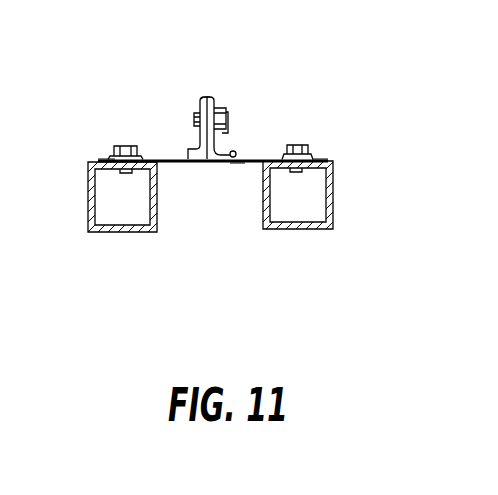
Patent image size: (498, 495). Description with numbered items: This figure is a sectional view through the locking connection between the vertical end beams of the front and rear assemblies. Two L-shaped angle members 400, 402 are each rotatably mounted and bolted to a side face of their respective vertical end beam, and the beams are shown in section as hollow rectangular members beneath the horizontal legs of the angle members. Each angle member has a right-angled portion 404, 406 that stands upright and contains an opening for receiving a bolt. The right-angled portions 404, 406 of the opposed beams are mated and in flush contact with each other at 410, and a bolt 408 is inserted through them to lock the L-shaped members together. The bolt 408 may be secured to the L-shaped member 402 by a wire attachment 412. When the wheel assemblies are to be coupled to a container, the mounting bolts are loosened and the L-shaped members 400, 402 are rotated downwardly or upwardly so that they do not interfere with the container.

The L-shaped angle member 400 is at (172, 164).
The L-shaped angle member 402 is at (237, 165).
The right-angled portion 404 is at (198, 151).
The right-angled portion 406 is at (214, 102).
The bolt 408 is at (228, 112).
The flush contact location 410 is at (207, 97).
The wire attachment 412 is at (234, 152).